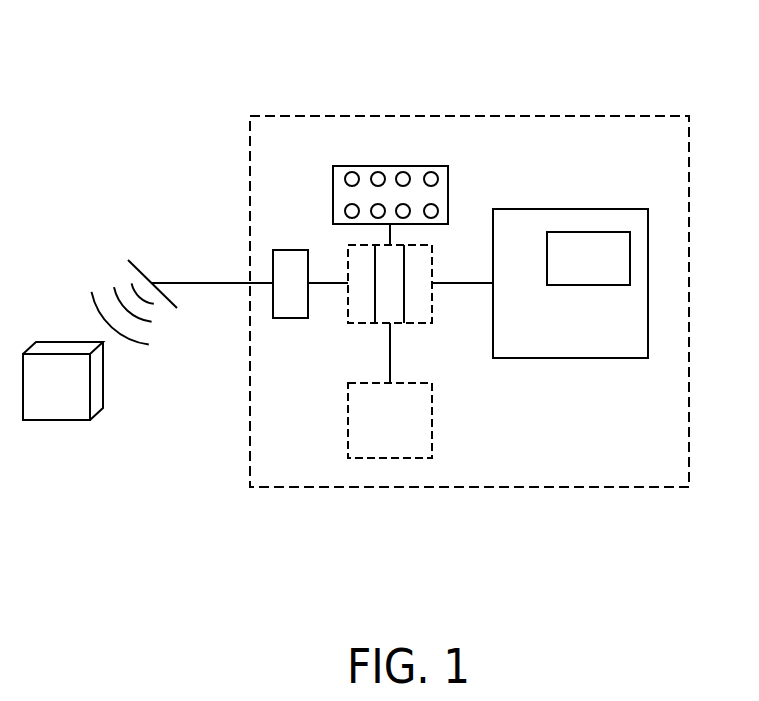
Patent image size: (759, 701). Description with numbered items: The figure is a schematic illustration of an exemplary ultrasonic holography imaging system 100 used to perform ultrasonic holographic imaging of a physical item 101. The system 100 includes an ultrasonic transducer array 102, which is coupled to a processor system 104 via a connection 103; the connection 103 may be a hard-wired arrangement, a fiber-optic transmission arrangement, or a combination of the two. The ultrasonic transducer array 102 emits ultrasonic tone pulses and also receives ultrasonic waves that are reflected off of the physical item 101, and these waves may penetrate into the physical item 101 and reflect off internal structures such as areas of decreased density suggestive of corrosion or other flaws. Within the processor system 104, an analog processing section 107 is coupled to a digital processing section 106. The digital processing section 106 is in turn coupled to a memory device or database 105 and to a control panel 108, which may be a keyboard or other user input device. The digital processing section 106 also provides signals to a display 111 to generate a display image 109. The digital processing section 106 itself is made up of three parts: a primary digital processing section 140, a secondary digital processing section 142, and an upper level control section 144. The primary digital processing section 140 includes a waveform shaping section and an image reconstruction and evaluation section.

The ultrasonic holography imaging system 100 is at (204, 89).
The physical item 101 is at (72, 420).
The ultrasonic transducer array 102 is at (144, 259).
The connection 103 is at (207, 283).
The processor system 104 is at (485, 115).
The memory device (database) 105 is at (377, 460).
The digital processing section 106 is at (357, 392).
The analog processing section 107 is at (292, 250).
The control panel 108 is at (347, 166).
The display image 109 is at (630, 248).
The display 111 is at (626, 262).
The primary digital processing section 140 is at (360, 305).
The secondary digital processing section 142 is at (393, 313).
The upper level control section 144 is at (418, 303).